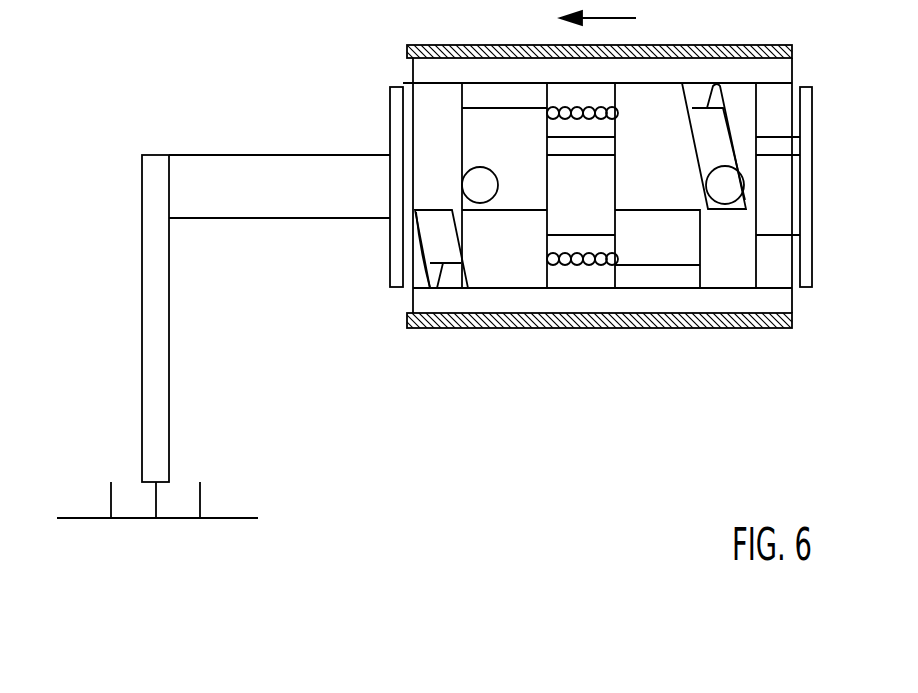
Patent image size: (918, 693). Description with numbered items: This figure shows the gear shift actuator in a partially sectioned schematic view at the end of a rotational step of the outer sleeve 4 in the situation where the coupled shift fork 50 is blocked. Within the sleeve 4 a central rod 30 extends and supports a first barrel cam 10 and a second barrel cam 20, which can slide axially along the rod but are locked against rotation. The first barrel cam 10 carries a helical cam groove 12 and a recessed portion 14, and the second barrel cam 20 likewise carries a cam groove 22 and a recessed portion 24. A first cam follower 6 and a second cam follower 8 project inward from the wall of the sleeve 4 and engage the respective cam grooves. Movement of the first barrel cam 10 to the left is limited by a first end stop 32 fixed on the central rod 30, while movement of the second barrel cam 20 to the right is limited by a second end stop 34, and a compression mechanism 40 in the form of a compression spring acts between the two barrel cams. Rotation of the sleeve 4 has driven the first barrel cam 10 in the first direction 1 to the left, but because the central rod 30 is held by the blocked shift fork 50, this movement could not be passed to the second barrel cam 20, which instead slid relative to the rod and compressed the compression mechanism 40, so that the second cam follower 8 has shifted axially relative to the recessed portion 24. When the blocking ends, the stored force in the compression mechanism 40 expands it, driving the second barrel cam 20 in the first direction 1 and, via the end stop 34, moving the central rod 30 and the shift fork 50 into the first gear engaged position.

The first direction 1 is at (608, 19).
The outer sleeve 4 is at (708, 329).
The first cam follower 6 is at (722, 195).
The second cam follower 8 is at (481, 204).
The first barrel cam 10 is at (669, 157).
The cam groove 12 is at (705, 118).
The recessed portion 14 is at (669, 250).
The second barrel cam 20 is at (450, 157).
The cam groove 22 is at (448, 249).
The recessed portion 24 is at (532, 157).
The central rod 30 is at (241, 153).
The first end stop 32 is at (822, 157).
The second end stop 34 is at (390, 104).
The compression mechanism 40 is at (582, 250).
The shift fork 50 is at (170, 348).